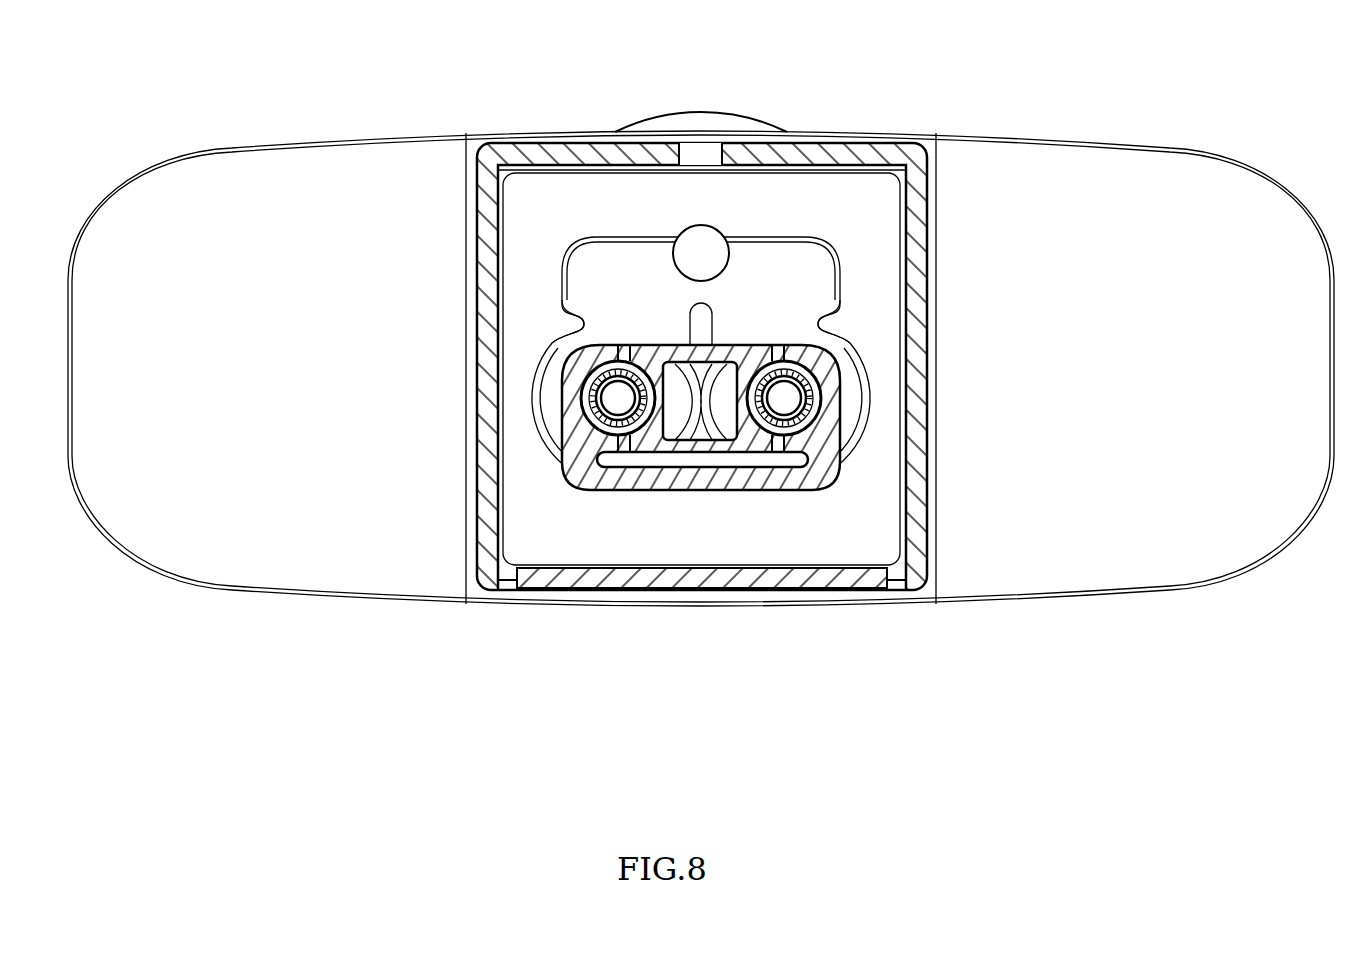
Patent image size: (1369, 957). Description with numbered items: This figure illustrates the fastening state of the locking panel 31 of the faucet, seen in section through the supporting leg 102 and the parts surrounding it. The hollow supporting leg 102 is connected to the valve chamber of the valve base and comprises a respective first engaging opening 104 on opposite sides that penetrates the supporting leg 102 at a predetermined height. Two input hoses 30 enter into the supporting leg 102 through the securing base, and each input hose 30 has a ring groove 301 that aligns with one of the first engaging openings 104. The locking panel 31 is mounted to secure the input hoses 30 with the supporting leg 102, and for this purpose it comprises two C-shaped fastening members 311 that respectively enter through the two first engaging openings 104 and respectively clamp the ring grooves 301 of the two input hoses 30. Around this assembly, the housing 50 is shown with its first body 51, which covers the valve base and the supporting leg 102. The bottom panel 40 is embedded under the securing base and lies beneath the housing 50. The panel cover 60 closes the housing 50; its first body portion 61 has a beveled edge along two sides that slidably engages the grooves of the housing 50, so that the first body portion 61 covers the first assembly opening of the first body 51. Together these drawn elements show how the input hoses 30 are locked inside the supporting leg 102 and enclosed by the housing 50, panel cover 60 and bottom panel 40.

The bottom panel 40 is at (1195, 139).
The housing 50 is at (920, 284).
The first body 51 is at (748, 152).
The panel cover 60 is at (702, 632).
The first body portion 61 is at (615, 594).
The input hose 30 is at (652, 357).
The ring groove 301 is at (568, 348).
The C-shaped fastening member 311 is at (538, 422).
The locking panel 31 is at (694, 478).
The supporting leg 102 is at (657, 452).
The first engaging opening 104 is at (603, 345).